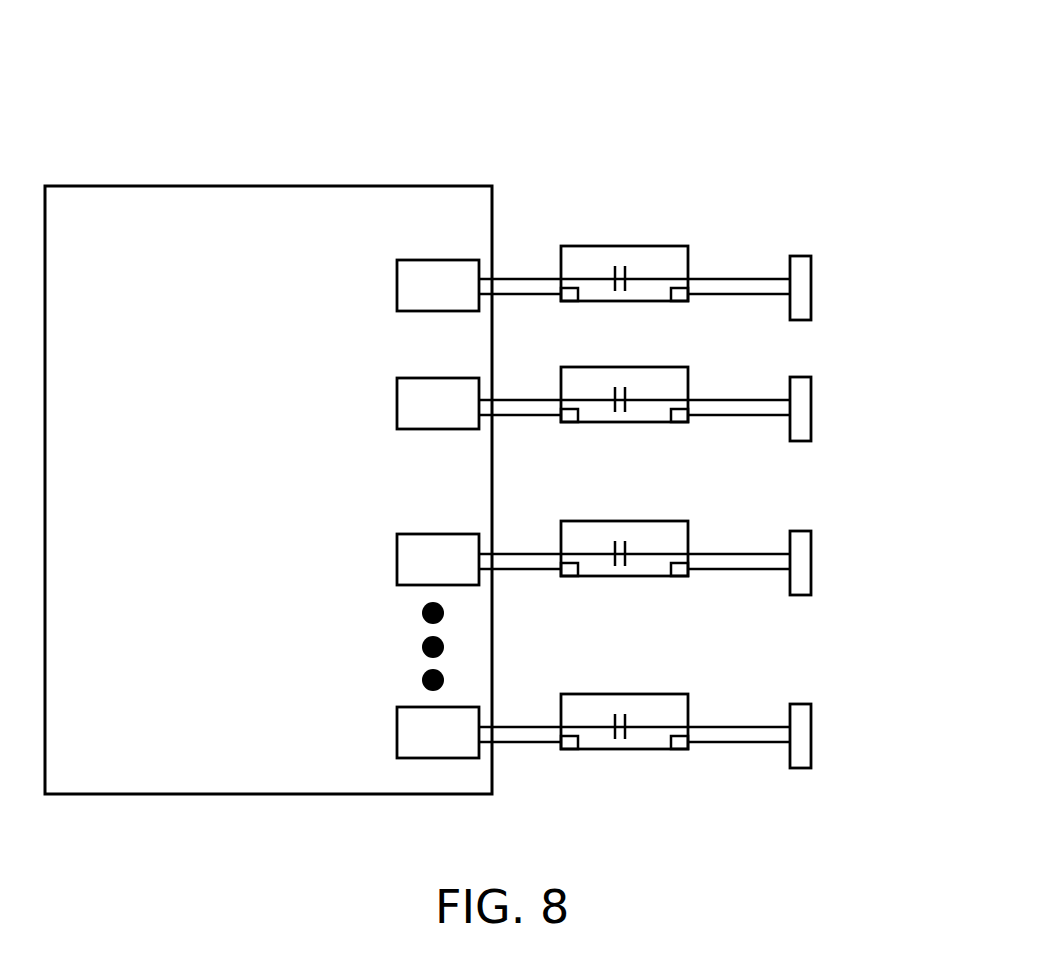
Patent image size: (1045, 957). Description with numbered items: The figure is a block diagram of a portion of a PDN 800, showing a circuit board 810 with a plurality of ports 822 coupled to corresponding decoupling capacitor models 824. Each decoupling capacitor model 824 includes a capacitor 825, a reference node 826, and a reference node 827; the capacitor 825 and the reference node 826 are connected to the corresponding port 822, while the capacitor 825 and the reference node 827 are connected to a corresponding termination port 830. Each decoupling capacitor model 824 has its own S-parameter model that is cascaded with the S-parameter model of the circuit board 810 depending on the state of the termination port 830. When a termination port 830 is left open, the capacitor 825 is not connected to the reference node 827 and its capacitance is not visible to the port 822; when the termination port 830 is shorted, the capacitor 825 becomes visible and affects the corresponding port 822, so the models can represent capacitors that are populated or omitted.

The PDN 800 is at (787, 70).
The circuit board 810 is at (269, 511).
The ports 822 is at (466, 299).
The decoupling capacitor models 824 is at (673, 246).
The capacitor 825 is at (616, 265).
The reference node 826 is at (568, 301).
The reference node 827 is at (680, 296).
The termination port 830 is at (811, 284).